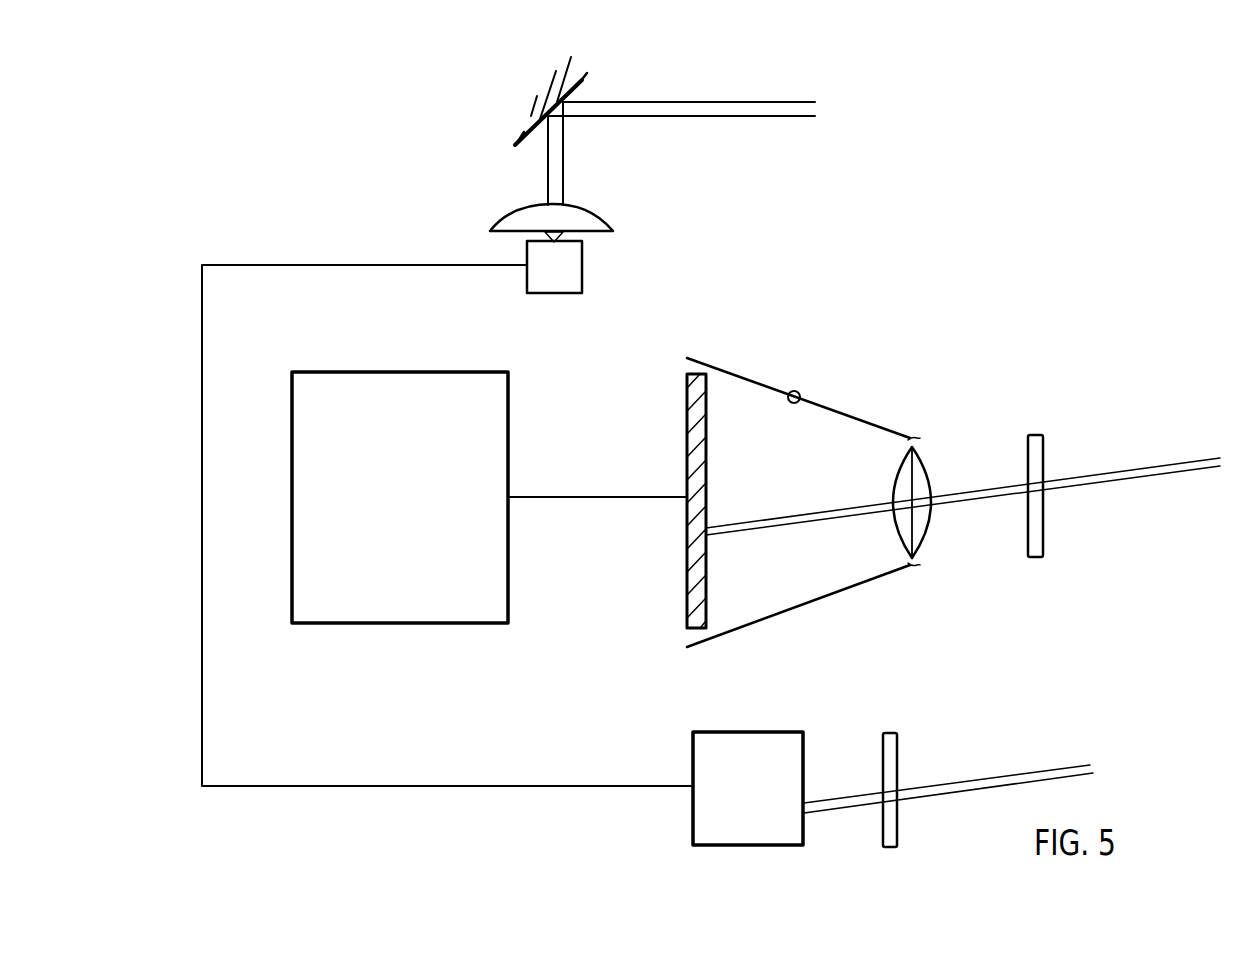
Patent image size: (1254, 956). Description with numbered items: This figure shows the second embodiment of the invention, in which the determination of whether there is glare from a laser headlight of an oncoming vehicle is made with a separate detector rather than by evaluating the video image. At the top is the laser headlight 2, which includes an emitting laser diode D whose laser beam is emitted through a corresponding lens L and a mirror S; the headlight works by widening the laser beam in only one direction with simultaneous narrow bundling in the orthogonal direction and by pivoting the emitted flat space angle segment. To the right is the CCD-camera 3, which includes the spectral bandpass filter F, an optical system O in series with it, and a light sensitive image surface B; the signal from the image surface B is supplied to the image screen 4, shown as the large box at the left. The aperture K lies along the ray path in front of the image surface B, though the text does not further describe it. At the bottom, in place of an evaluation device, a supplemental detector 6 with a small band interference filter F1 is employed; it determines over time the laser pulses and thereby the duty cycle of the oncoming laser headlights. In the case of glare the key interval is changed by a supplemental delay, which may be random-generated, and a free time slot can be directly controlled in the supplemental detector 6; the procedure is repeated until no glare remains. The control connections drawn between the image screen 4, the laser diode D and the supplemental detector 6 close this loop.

The laser headlight 2 is at (382, 110).
The CCD-camera 3 is at (913, 247).
The image screen 4 is at (348, 387).
The supplemental detector 6 is at (705, 765).
The mirror S is at (533, 121).
The lens L is at (522, 218).
The laser diode D is at (562, 277).
The light sensitive image surface B is at (698, 390).
The aperture K is at (800, 394).
The optical system O is at (908, 472).
The spectral bandpass filter F is at (1037, 447).
The small band interference filter F1 is at (892, 748).